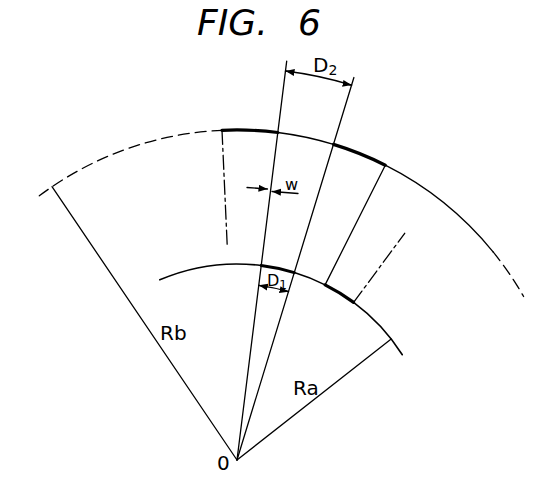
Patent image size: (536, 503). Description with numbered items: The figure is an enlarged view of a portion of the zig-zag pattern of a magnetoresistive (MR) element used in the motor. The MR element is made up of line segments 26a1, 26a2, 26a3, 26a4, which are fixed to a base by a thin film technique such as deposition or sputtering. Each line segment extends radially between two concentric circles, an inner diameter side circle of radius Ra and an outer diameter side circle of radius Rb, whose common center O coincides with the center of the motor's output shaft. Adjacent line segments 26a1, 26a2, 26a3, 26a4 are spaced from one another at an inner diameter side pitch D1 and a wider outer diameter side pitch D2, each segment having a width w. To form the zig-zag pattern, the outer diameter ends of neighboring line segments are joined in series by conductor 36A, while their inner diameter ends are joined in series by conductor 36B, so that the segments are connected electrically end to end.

The line segment 26a1 is at (222, 151).
The line segment 26a2 is at (266, 222).
The line segment 26a3 is at (307, 230).
The line segment 26a4 is at (350, 233).
The conductor 36A is at (357, 148).
The conductor 36B is at (333, 298).